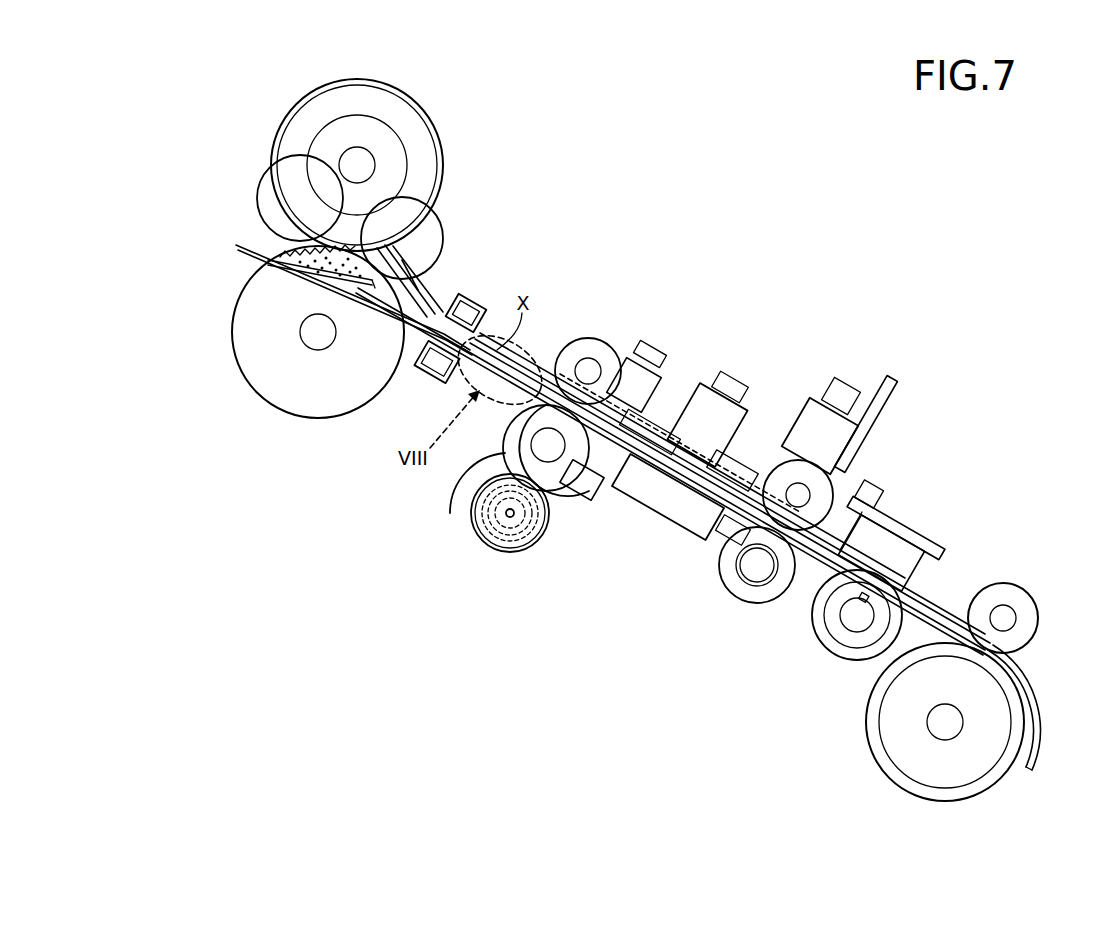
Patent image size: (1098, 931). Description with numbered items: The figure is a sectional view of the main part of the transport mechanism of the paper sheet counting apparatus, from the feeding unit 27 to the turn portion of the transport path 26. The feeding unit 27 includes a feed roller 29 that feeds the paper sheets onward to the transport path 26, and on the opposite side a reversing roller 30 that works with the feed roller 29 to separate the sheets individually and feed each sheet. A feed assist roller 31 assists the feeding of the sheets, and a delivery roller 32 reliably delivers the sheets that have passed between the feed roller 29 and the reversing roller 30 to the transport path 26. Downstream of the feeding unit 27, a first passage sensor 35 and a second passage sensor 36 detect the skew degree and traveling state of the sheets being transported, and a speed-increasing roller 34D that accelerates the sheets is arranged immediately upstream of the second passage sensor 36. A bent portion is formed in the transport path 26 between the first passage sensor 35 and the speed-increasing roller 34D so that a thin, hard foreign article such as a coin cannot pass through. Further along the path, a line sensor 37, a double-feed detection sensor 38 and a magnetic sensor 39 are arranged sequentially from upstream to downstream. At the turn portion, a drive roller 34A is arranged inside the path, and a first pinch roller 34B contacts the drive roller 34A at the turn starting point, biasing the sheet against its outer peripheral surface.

The transport path 26 is at (925, 604).
The feeding unit 27 is at (236, 237).
The feed roller 29 is at (291, 414).
The reversing roller 30 is at (413, 97).
The feed assist roller 31 is at (254, 194).
The delivery roller 32 is at (438, 213).
The drive roller 34A is at (863, 724).
The first pinch roller 34B is at (1030, 604).
The speed-increasing roller 34D is at (470, 512).
The first passage sensor 35 is at (468, 306).
The second passage sensor 36 is at (647, 349).
The line sensor 37 is at (740, 386).
The double-feed detection sensor 38 is at (843, 397).
The magnetic sensor 39 is at (901, 527).